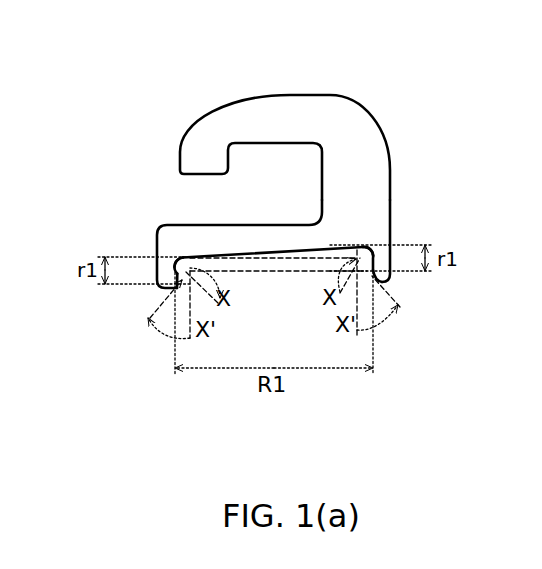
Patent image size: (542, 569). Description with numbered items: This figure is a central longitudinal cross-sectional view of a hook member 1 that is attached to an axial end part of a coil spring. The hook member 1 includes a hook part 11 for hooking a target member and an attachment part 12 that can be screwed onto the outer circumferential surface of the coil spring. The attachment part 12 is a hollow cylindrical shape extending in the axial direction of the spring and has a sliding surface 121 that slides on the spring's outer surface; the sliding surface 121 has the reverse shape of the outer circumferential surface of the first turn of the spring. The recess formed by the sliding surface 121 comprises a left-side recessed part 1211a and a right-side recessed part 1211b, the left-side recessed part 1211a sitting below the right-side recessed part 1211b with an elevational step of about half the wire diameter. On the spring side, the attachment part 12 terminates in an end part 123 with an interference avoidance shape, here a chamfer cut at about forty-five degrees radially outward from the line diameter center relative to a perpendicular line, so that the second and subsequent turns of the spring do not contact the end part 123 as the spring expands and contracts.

The hook member 1 is at (274, 183).
The hook part 11 is at (205, 147).
The attachment part 12 is at (230, 240).
The sliding surface 121 is at (157, 255).
The left-side recessed part 1211a is at (176, 262).
The right-side recessed part 1211b is at (374, 250).
The end part 123 is at (172, 287).